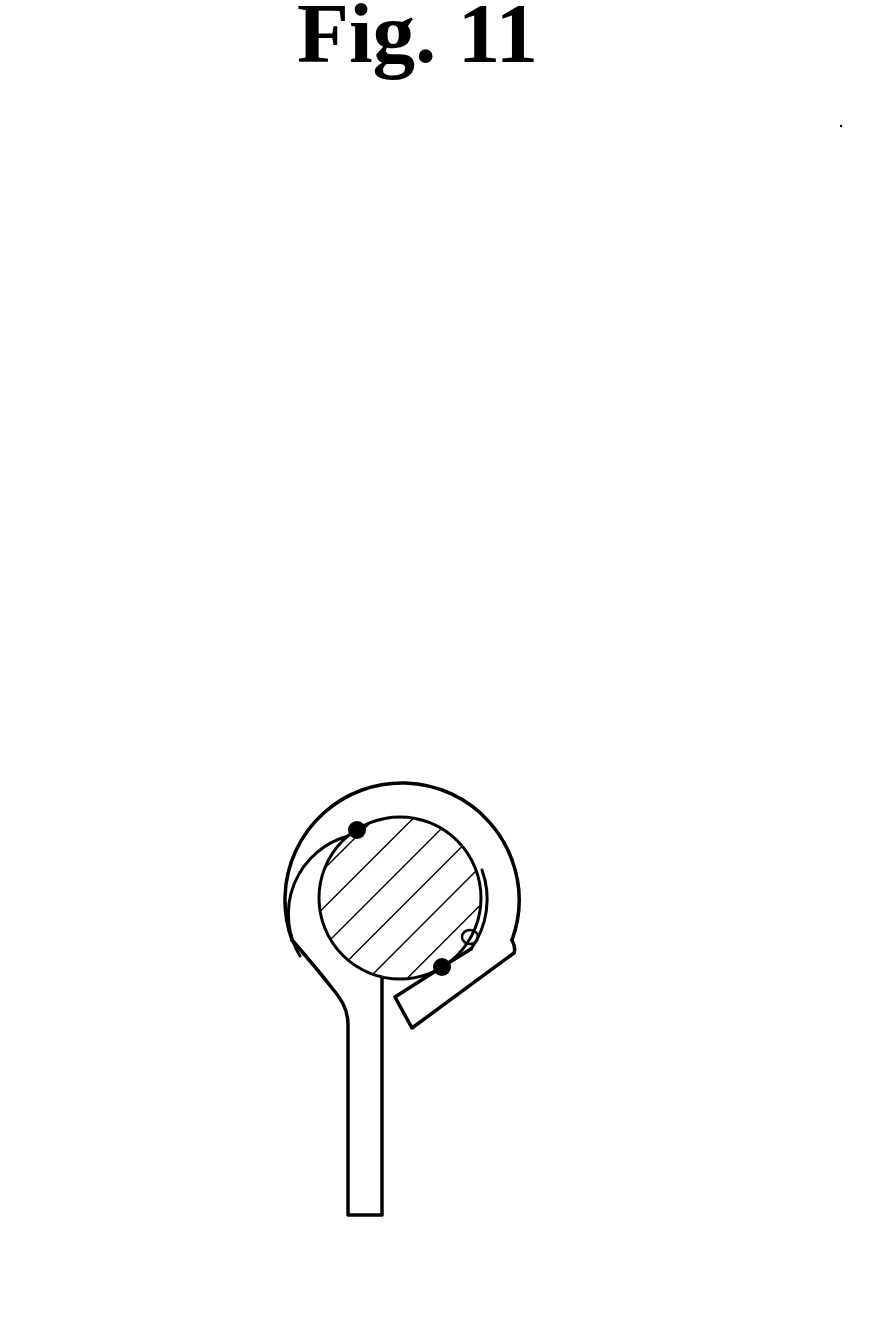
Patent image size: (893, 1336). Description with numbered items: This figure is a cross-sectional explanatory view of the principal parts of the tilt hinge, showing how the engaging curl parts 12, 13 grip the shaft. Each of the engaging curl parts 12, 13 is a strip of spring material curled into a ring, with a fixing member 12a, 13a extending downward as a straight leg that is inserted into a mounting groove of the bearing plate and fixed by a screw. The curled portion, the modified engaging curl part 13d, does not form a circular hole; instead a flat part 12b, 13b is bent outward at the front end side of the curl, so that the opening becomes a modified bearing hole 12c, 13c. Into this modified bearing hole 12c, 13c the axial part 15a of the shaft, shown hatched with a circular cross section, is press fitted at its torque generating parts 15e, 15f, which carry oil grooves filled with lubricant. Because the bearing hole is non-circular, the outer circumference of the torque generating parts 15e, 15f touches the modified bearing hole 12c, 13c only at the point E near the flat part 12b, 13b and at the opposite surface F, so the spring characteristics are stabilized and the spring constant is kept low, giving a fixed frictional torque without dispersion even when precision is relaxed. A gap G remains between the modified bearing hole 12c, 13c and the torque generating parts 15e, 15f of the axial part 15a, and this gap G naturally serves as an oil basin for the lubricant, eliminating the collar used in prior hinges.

The engaging curl part 12 is at (415, 959).
The engaging curl part 13 is at (415, 959).
The fixing member 12a is at (359, 959).
The fixing member 13a is at (358, 1073).
The modified engaging curl part 13d is at (435, 802).
The flat part 12b is at (532, 995).
The flat part 13b is at (458, 1000).
The modified bearing hole 12c is at (584, 871).
The modified bearing hole 13c is at (505, 960).
The axial part 15a is at (352, 940).
The torque generating part 15e is at (193, 872).
The torque generating part 15f is at (322, 866).
The opposite surface F is at (352, 828).
The contact point E is at (442, 972).
The gap G is at (462, 955).